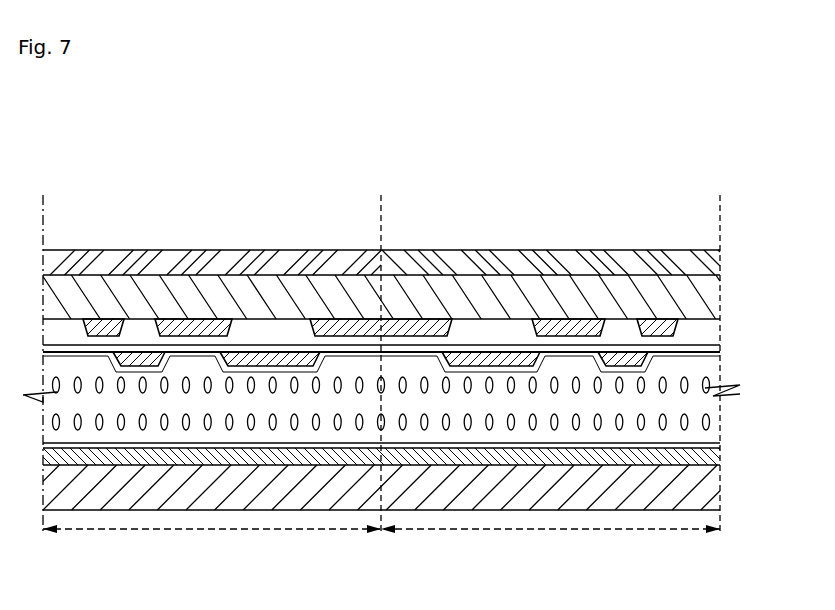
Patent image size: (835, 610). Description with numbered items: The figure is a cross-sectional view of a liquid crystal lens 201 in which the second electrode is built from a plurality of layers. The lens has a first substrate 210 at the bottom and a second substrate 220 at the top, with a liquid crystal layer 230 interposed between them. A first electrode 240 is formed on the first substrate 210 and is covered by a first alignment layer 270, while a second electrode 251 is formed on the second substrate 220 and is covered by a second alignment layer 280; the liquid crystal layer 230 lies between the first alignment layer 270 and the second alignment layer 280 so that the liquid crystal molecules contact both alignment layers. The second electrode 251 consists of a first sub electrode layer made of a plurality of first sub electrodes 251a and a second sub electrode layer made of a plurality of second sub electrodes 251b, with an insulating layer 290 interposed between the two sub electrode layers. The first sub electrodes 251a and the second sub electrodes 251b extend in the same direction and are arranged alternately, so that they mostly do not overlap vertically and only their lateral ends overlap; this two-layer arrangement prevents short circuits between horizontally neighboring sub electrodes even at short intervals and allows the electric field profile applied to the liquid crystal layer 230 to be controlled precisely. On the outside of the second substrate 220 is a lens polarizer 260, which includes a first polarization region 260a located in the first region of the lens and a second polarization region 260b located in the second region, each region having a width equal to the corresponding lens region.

The liquid crystal lens 201 is at (642, 160).
The first substrate 210 is at (722, 485).
The second substrate 220 is at (716, 298).
The liquid crystal layer 230 is at (717, 413).
The first electrode 240 is at (722, 456).
The second electrode 251 is at (152, 186).
The first sub electrodes 251a is at (122, 318).
The second sub electrodes 251b is at (153, 358).
The lens polarizer 260 is at (729, 261).
The first polarization region 260a is at (233, 250).
The second polarization region 260b is at (530, 249).
The first alignment layer 270 is at (722, 443).
The second alignment layer 280 is at (698, 351).
The insulating layer 290 is at (710, 335).